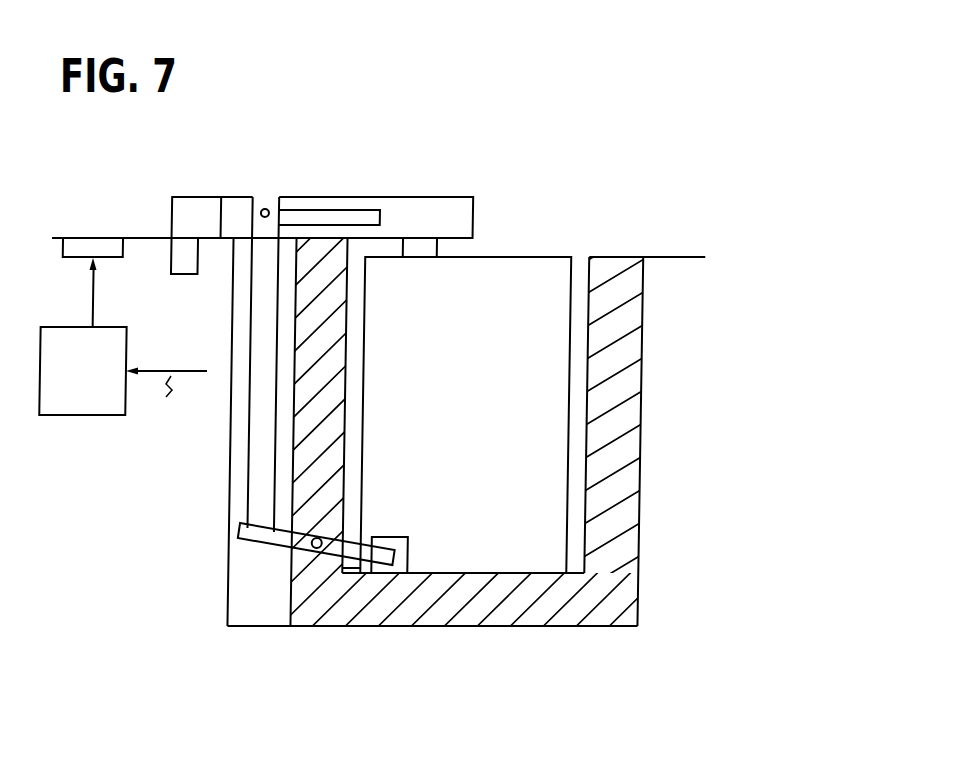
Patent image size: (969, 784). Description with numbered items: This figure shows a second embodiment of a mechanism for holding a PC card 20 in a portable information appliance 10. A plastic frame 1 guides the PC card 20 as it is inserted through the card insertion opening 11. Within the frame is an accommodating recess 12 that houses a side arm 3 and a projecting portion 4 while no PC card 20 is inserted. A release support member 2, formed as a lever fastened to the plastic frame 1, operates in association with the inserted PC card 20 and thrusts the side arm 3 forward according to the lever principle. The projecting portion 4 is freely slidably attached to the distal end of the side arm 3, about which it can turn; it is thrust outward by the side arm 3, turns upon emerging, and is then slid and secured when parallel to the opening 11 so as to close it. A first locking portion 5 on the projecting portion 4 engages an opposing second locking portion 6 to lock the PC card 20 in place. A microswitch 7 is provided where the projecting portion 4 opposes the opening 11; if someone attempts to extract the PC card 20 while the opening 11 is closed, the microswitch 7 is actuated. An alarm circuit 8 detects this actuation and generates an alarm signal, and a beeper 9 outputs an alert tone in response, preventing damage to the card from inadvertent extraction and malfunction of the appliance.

The plastic frame 1 is at (637, 330).
The release support member 2 is at (378, 553).
The side arm 3 is at (248, 472).
The projecting portion 4 is at (297, 195).
The first locking portion 5 is at (183, 196).
The second locking portion 6 is at (175, 253).
The microswitch 7 is at (490, 268).
The alarm circuit 8 is at (85, 417).
The beeper 9 is at (82, 258).
The portable information appliance 10 is at (630, 257).
The card insertion opening 11 is at (575, 273).
The accommodating recess 12 is at (247, 598).
The PC card 20 is at (430, 247).